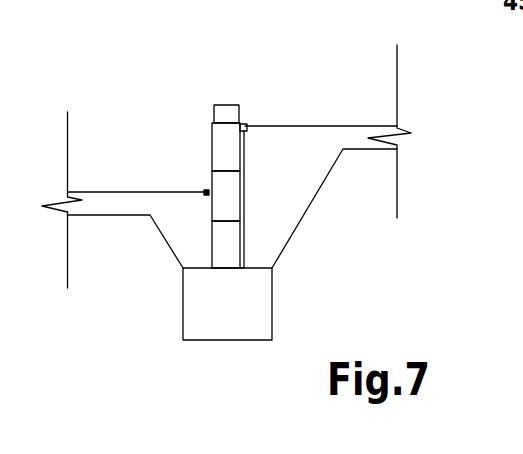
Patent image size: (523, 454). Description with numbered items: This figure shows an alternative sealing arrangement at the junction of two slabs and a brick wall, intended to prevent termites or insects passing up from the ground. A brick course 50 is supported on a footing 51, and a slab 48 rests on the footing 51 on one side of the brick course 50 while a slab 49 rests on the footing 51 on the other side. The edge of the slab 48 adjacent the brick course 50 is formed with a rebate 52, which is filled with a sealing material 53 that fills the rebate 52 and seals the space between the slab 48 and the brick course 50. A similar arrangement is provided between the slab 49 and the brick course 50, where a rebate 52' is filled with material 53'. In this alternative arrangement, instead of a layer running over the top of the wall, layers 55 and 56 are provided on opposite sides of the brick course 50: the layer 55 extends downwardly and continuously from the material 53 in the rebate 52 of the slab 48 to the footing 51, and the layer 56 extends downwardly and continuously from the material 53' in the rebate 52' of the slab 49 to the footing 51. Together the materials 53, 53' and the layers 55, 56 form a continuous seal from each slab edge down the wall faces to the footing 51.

The slab 48 is at (133, 190).
The slab 49 is at (337, 133).
The brick course 50 is at (233, 104).
The footing 51 is at (248, 322).
The rebate 52 is at (135, 244).
The rebate 52' is at (323, 178).
The material 53 is at (200, 171).
The material 53' is at (270, 92).
The layer 55 is at (211, 232).
The layer 56 is at (245, 195).